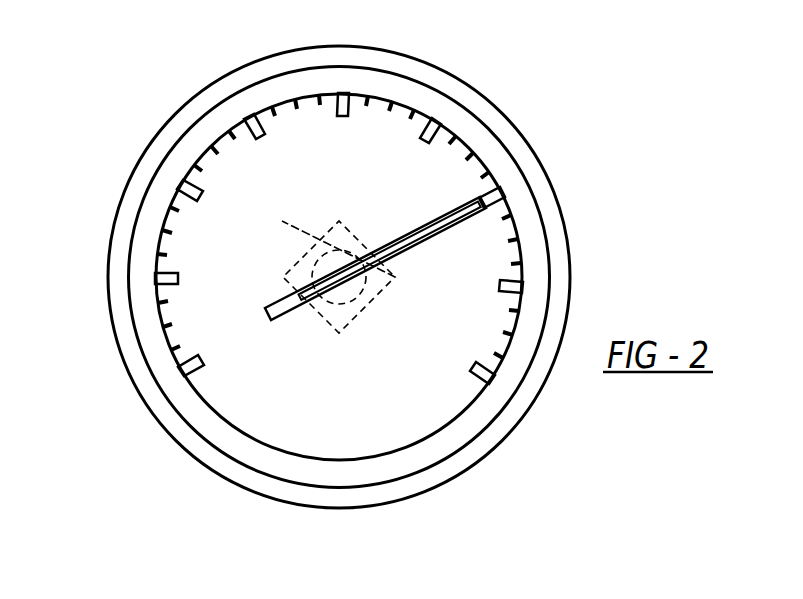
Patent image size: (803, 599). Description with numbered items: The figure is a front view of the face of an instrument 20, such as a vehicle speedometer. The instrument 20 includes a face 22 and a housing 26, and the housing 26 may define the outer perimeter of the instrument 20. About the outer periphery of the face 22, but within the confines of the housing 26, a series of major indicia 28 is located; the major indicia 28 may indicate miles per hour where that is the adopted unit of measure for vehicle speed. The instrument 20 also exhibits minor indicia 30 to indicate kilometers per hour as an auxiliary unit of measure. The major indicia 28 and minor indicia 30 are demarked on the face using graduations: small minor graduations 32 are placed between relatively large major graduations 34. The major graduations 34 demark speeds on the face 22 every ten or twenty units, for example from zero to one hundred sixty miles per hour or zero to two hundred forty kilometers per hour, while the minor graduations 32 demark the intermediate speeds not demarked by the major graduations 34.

The instrument 20 is at (141, 112).
The face 22 is at (341, 409).
The housing 26 is at (500, 113).
The major indicia 28 is at (186, 213).
The minor indicia 30 is at (272, 331).
The minor graduations 32 is at (289, 100).
The major graduations 34 is at (267, 104).